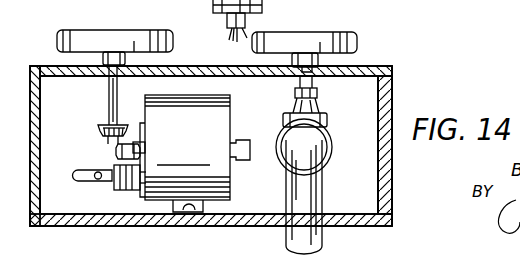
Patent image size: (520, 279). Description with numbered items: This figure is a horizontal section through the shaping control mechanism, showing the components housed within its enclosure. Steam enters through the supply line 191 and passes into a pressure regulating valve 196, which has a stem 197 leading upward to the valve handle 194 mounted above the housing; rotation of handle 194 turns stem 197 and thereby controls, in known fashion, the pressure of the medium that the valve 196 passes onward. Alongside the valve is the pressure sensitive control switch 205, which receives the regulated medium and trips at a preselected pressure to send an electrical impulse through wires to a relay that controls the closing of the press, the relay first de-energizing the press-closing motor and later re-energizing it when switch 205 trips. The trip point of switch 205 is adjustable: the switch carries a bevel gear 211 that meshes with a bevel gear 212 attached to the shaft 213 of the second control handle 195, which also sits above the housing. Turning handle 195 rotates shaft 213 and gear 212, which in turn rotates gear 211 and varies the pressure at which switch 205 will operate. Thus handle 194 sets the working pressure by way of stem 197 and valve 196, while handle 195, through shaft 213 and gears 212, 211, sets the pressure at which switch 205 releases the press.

The supply line 191 is at (322, 238).
The valve handle 194 is at (345, 32).
The control handle 195 is at (91, 32).
The pressure regulating valve 196 is at (334, 141).
The stem 197 is at (318, 71).
The pressure sensitive control switch 205 is at (228, 118).
The bevel gear 211 is at (116, 157).
The bevel gear 212 is at (101, 127).
The shaft 213 is at (108, 97).